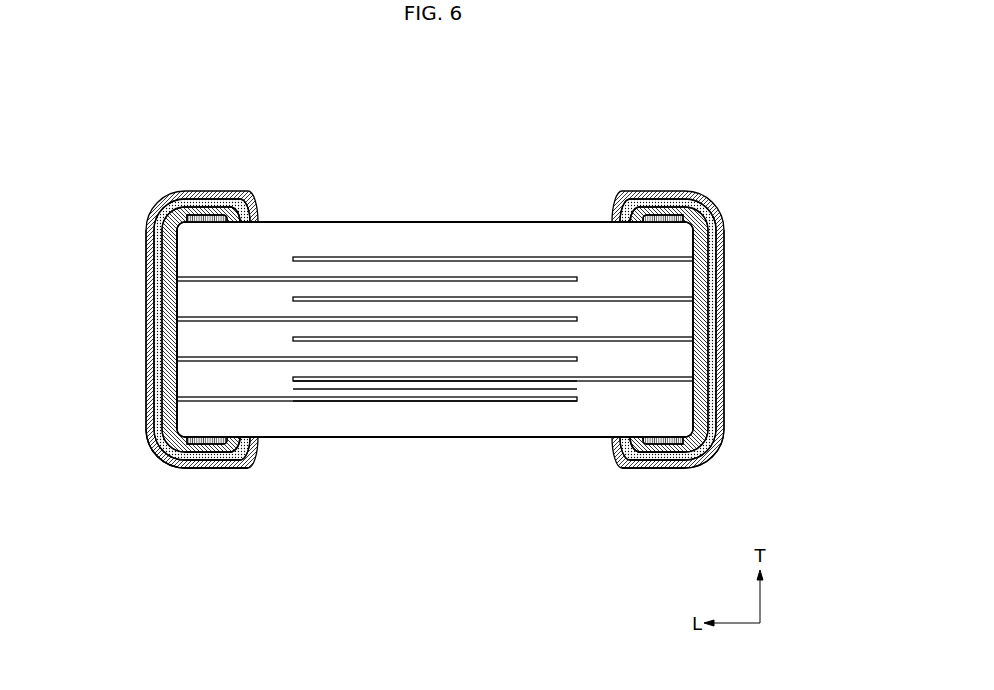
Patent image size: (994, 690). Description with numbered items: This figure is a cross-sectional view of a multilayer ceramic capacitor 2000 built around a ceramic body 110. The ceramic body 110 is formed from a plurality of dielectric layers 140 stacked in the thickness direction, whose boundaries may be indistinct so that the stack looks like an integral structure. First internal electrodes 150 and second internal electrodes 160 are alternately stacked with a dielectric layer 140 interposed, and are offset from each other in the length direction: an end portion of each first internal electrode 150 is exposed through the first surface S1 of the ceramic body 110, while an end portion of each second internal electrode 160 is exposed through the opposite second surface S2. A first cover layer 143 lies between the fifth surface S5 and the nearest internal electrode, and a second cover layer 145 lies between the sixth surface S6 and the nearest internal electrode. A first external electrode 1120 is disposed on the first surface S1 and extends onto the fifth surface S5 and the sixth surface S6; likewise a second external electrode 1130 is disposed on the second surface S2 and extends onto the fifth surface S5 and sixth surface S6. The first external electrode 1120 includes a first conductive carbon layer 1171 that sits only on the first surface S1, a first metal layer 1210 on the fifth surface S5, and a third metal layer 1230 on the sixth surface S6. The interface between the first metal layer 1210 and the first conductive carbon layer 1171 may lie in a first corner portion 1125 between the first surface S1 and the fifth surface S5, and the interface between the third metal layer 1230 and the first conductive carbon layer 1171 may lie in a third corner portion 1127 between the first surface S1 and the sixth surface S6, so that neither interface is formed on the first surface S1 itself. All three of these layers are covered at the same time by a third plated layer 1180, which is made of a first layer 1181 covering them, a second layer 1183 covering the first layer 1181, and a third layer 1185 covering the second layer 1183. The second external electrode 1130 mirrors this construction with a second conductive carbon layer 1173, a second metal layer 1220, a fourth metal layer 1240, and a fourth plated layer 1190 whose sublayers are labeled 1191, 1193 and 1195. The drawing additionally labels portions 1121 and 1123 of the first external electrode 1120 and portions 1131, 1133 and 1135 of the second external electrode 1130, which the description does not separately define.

The multilayer ceramic capacitor 2000 is at (452, 113).
The ceramic body 110 is at (470, 195).
The dielectric layer 140 is at (532, 389).
The first cover layer 143 is at (334, 232).
The second cover layer 145 is at (336, 423).
The first internal electrode 150 is at (436, 401).
The second internal electrode 160 is at (480, 381).
The first surface S1 is at (174, 294).
The second surface S2 is at (698, 273).
The fifth surface S5 is at (386, 222).
The sixth surface S6 is at (383, 437).
The first external electrode 1120 is at (300, 672).
The first electrode layer 1121 is at (161, 338).
The first conductive resin layer 1123 is at (204, 203).
The first corner portion 1125 is at (158, 202).
The third corner portion 1127 is at (160, 449).
The second external electrode 1130 is at (414, 672).
The second electrode layer 1131 is at (706, 333).
The second conductive resin layer 1133 is at (661, 202).
The second plating layer 1135 is at (712, 202).
The first conductive carbon layer 1171 is at (171, 383).
The second conductive carbon layer 1173 is at (698, 392).
The third plated layer 1180 is at (143, 518).
The first layer 1181 is at (205, 456).
The second layer 1183 is at (172, 464).
The third layer 1185 is at (238, 452).
The fourth plated layer 1190 is at (605, 518).
The second band layer 1191 is at (660, 456).
The second band outer layer 1193 is at (700, 464).
The second band inner layer 1195 is at (629, 460).
The first metal layer 1210 is at (226, 207).
The second metal layer 1220 is at (640, 205).
The third metal layer 1230 is at (250, 454).
The fourth metal layer 1240 is at (614, 451).